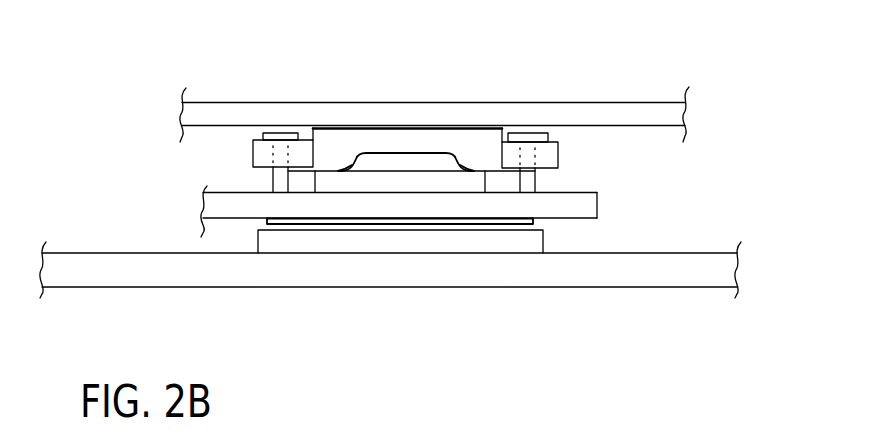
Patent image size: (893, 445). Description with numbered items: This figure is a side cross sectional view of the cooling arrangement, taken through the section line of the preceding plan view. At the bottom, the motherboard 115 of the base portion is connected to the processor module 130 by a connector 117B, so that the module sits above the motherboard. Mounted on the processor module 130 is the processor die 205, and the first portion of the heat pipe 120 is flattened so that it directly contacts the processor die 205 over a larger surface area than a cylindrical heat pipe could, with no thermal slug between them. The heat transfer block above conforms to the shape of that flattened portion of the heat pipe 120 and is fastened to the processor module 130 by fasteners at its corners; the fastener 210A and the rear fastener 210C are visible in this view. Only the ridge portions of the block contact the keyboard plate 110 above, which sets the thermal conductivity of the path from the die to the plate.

The keyboard plate 110 is at (556, 107).
The processor die 205 is at (452, 183).
The fastener 210A is at (273, 183).
The rear fastener 210C is at (536, 183).
The heat pipe 120 is at (387, 163).
The processor module 130 is at (572, 216).
The connector 117B is at (428, 251).
The motherboard 115 is at (492, 282).